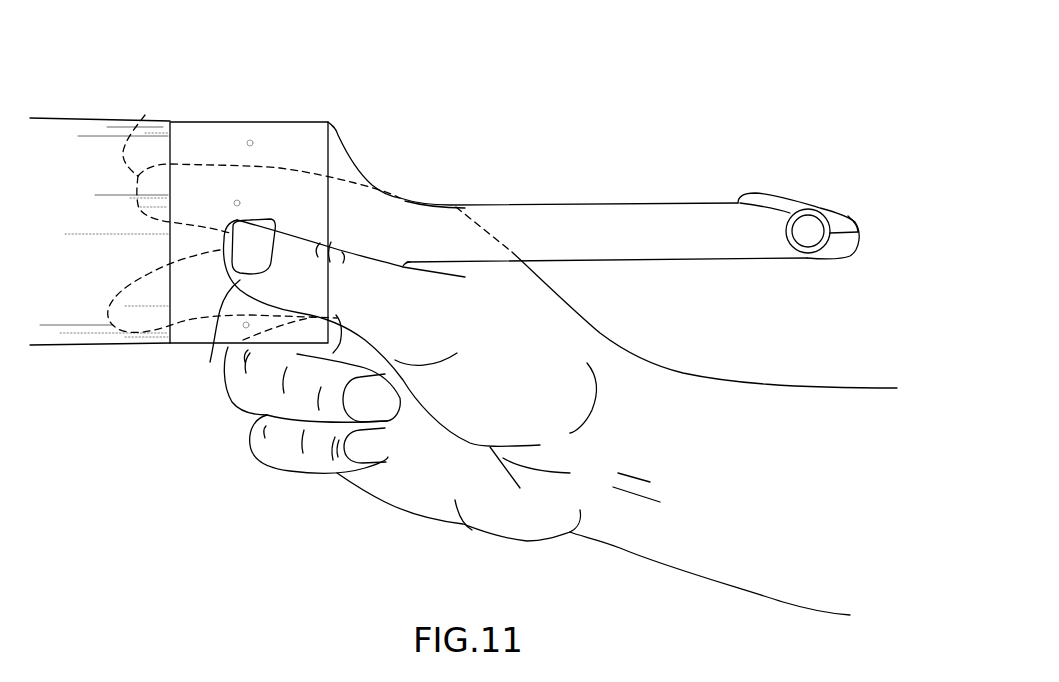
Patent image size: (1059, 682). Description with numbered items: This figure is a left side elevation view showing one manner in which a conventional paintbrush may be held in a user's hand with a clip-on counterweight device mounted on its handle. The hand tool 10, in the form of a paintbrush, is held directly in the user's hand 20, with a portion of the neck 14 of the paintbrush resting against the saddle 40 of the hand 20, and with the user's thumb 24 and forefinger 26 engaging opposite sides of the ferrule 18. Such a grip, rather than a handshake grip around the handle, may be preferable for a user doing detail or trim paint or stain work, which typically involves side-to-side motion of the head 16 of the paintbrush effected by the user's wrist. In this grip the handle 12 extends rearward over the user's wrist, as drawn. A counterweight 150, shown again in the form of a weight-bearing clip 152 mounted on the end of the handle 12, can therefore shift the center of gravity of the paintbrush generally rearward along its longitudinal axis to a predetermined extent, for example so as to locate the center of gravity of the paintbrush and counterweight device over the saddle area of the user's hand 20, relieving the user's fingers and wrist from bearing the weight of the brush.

The hand tool 10 is at (82, 48).
The handle 12 is at (664, 183).
The neck 14 is at (355, 160).
The head 16 is at (88, 368).
The ferrule 18 is at (248, 122).
The user's hand 20 is at (645, 575).
The thumb 24 is at (219, 318).
The forefinger 26 is at (145, 115).
The saddle 40 is at (436, 285).
The counterweight 150 is at (788, 185).
The weight-bearing clip 152 is at (856, 222).